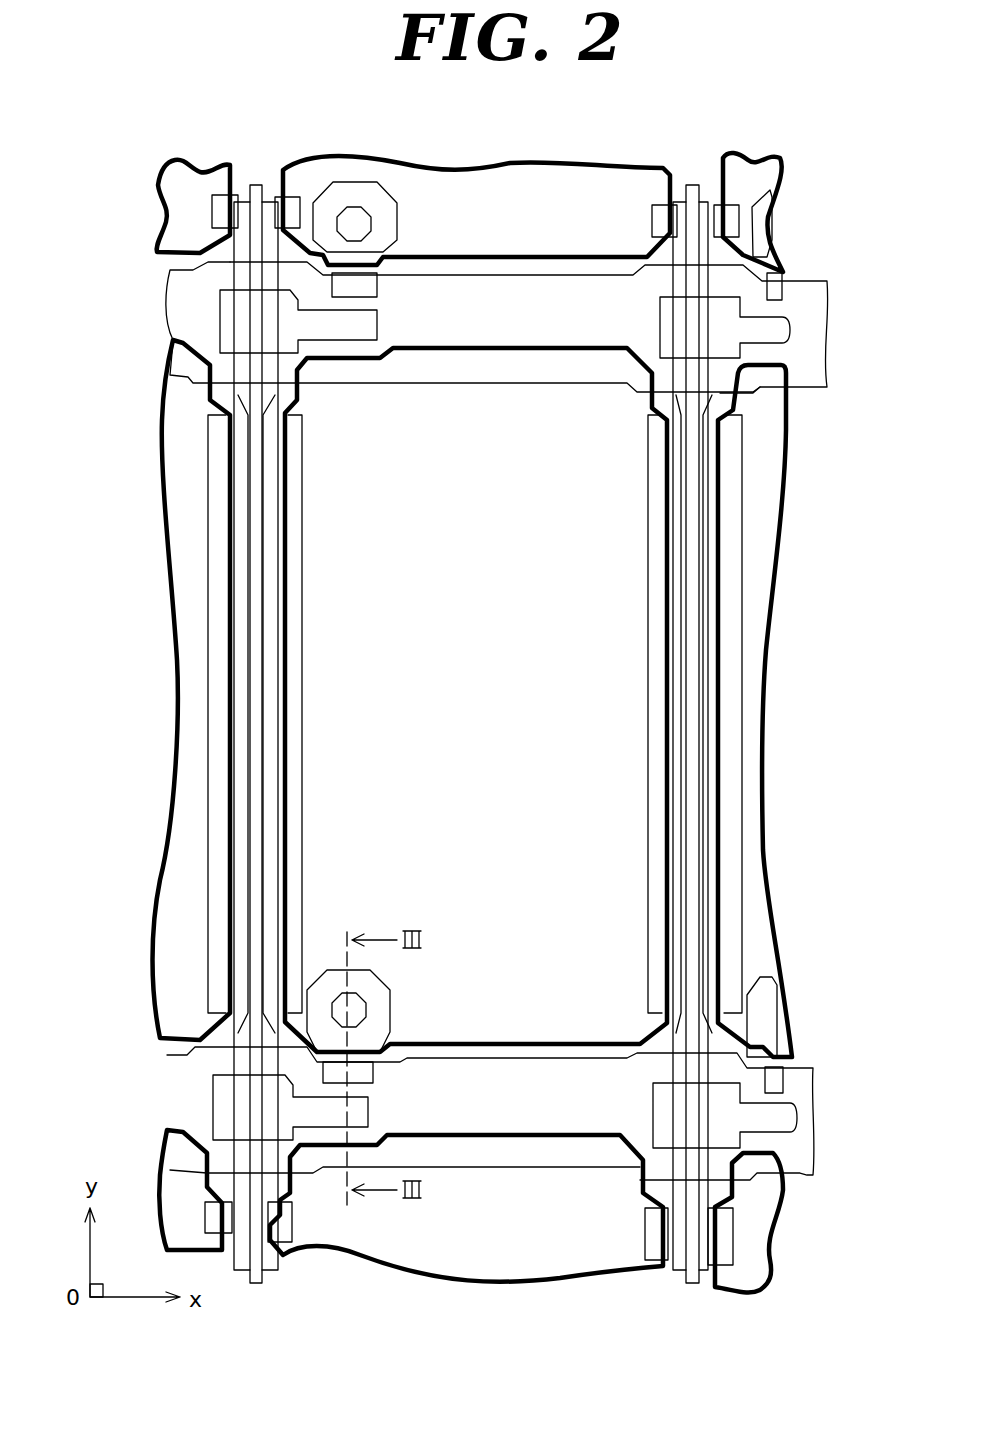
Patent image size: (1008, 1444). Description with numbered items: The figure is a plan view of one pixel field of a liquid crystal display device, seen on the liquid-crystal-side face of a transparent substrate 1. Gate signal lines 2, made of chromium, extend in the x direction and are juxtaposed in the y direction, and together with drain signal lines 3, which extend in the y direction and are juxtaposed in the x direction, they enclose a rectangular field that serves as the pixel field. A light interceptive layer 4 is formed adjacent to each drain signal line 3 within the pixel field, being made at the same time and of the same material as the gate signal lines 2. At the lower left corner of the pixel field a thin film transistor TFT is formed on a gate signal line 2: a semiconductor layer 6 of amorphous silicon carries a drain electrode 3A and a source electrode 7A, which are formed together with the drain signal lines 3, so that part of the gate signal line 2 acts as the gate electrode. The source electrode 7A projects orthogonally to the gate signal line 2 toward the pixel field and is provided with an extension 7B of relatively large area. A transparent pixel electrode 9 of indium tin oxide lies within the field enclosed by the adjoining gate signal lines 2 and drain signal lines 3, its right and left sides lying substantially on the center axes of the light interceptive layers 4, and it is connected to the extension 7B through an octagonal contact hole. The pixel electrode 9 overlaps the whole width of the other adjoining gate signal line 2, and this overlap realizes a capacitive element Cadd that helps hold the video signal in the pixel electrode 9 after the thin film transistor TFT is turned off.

The transparent substrate 1 is at (203, 1027).
The gate signal line 2 is at (810, 366).
The drain signal line 3 is at (238, 700).
The light interceptive layer 4 is at (273, 860).
The semiconductor layer 6 is at (330, 1133).
The source electrode 7A is at (383, 1062).
The extension 7B is at (320, 1008).
The pixel electrode 9 is at (587, 1043).
The drain electrode 3A is at (380, 1110).
The thin film transistor TFT is at (402, 1107).
The capacitive element Cadd is at (530, 384).